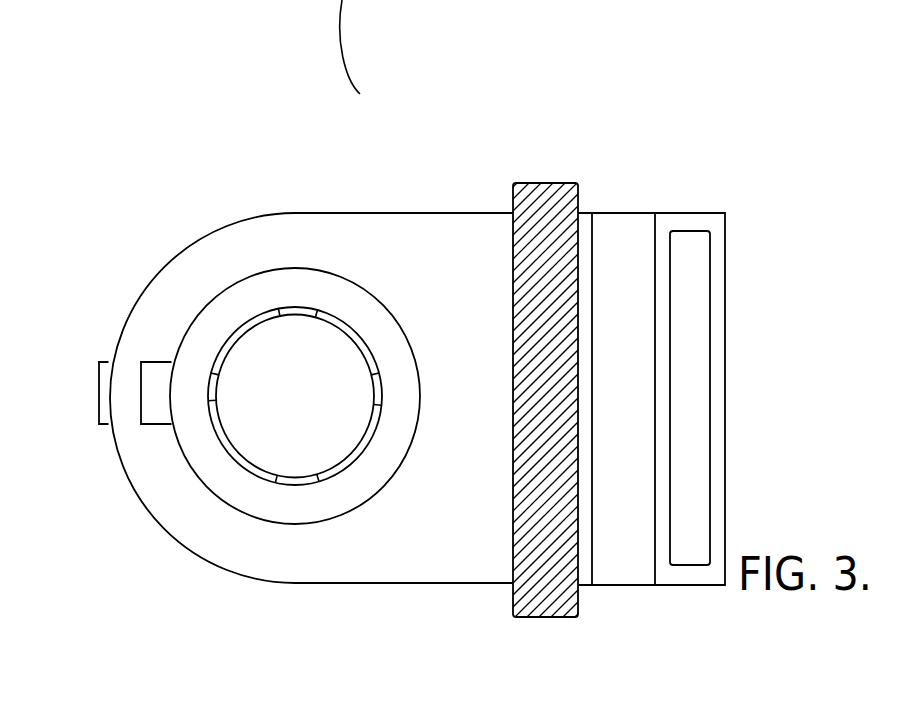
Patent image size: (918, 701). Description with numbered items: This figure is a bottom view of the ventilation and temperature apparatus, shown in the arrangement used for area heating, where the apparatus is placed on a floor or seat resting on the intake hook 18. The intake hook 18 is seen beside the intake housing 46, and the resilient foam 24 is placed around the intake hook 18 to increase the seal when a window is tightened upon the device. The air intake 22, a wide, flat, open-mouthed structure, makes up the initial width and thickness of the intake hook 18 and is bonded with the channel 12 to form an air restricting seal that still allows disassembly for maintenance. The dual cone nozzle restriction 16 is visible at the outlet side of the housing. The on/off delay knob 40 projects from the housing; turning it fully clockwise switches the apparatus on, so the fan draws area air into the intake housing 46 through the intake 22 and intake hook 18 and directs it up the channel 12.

The channel 12 is at (220, 290).
The dual cone nozzle restriction 16 is at (290, 338).
The intake hook 18 is at (587, 215).
The air intake 22 is at (690, 215).
The resilient foam 24 is at (523, 183).
The on/off delay knob 40 is at (142, 364).
The intake housing 46 is at (215, 231).